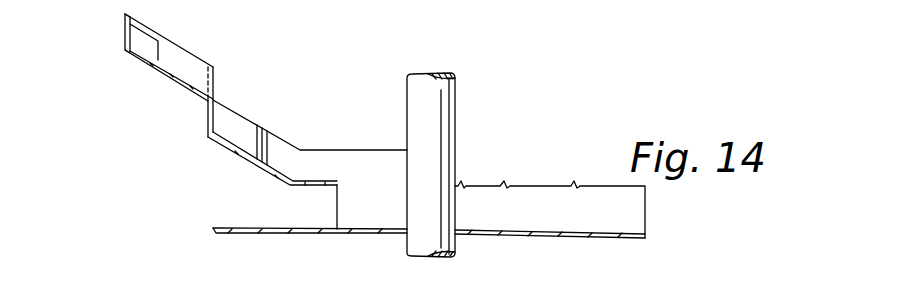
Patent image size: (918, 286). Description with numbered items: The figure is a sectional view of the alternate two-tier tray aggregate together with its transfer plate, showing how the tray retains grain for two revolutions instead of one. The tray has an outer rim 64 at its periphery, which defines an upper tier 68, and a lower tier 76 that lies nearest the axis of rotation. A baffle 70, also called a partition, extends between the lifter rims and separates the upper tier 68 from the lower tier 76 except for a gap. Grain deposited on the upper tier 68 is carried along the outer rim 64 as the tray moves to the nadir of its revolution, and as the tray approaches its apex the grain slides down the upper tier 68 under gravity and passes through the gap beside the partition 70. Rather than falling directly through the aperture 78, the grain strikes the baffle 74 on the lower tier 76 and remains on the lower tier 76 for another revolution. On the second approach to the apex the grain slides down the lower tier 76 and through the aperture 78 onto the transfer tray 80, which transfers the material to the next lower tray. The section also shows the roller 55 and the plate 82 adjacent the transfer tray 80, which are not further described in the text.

The roller 55 is at (456, 119).
The top plate 64 is at (125, 33).
The opening 68 is at (157, 69).
The vertical wall 70 is at (217, 78).
The posts 74 is at (270, 148).
The inclined wall 76 is at (220, 148).
The gap 78 is at (365, 189).
The base plate 80 is at (251, 227).
The support plate 82 is at (530, 202).